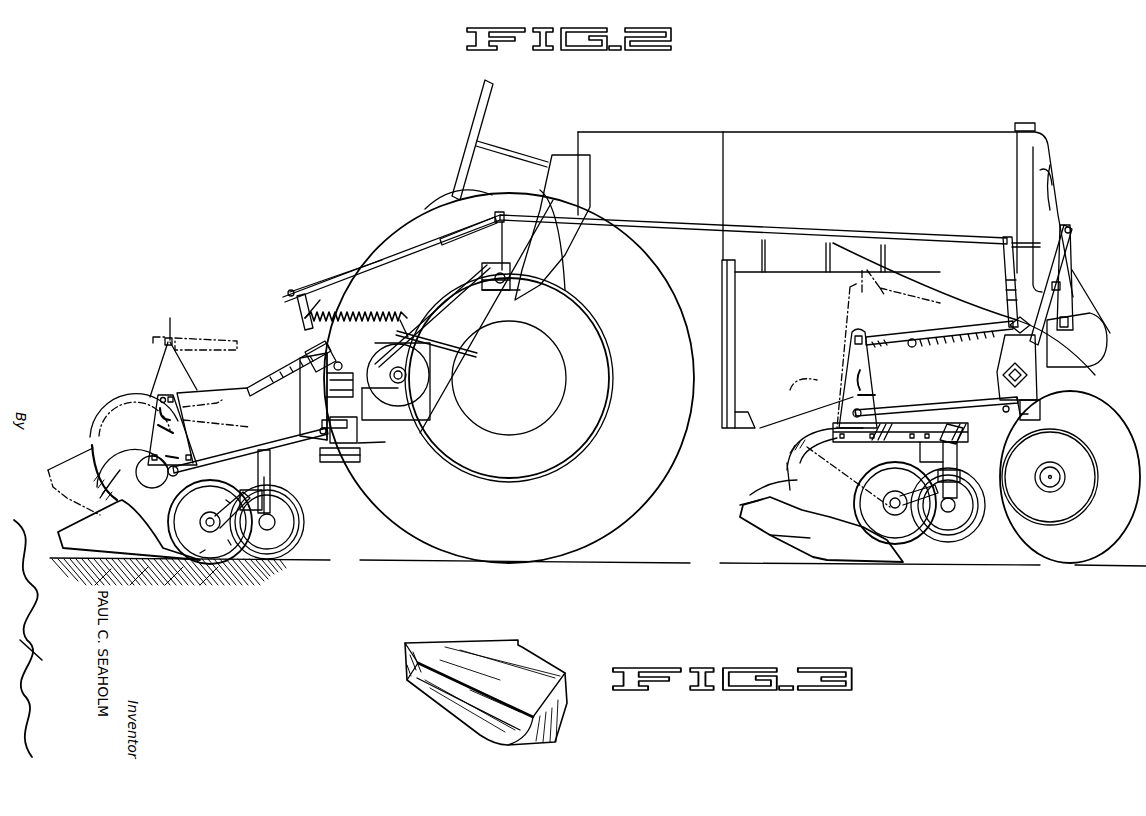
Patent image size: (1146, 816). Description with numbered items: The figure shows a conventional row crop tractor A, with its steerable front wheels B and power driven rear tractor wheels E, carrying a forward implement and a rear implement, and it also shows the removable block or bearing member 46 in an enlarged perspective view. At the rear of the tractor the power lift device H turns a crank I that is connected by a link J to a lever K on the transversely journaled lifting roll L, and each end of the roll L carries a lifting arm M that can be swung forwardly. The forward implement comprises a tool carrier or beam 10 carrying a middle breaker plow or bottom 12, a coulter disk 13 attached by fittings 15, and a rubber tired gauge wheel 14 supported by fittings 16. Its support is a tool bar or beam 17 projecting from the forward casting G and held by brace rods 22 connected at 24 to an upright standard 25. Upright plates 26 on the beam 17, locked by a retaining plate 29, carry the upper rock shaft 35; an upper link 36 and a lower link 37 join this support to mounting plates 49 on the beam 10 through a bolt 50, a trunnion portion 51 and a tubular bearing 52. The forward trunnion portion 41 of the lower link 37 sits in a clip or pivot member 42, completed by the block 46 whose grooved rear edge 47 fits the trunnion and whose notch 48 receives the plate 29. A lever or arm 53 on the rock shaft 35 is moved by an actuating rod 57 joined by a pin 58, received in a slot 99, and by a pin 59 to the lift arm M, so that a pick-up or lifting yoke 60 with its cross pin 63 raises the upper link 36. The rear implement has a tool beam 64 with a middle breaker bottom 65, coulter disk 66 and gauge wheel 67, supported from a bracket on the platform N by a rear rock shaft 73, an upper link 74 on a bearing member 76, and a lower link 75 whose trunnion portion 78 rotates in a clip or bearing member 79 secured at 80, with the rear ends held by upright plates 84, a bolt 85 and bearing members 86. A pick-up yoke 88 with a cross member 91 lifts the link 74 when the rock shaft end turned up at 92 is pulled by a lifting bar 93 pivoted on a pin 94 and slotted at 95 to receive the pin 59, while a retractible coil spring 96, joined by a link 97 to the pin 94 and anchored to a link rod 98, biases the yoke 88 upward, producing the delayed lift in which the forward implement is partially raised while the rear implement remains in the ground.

In FIG. 2, the row crop tractor A is at (800, 130).
In FIG. 2, the front wheels B is at (1093, 396).
In FIG. 2, the rear tractor wheels E is at (568, 215).
In FIG. 2, the forward casting G is at (1077, 340).
In FIG. 2, the power lift device H is at (396, 381).
In FIG. 2, the crank I is at (386, 350).
In FIG. 2, the link J is at (440, 305).
In FIG. 2, the lever K is at (506, 270).
In FIG. 2, the lifting roll L is at (518, 290).
In FIG. 2, the lifting arm M is at (478, 261).
In FIG. 2, the platform N is at (390, 455).
In FIG. 2, the tool carrier or beam 10 is at (800, 440).
In FIG. 2, the middle breaker plow or bottom 12 is at (748, 503).
In FIG. 2, the coulter disk 13 is at (910, 540).
In FIG. 2, the gauge wheel 14 is at (958, 540).
In FIG. 2, the fittings 15 is at (911, 455).
In FIG. 2, the fittings 16 is at (958, 462).
In FIG. 2, the tool bar or beam 17 is at (1002, 380).
In FIG. 2, the brace rods 22 is at (1054, 280).
In FIG. 2, the connection of brace rods to standard 24 is at (1072, 226).
In FIG. 2, the upright standard 25 is at (1075, 292).
In FIG. 2, the upright plates 26 is at (1033, 347).
In FIG. 2, the retaining plate 29 is at (1040, 405).
In FIG. 2, the upper rock shaft 35 is at (1022, 317).
In FIG. 2, the upper link 36 is at (905, 335).
In FIG. 2, the lower link 37 is at (925, 410).
In FIG. 2, the trunnion portion 41 is at (1005, 412).
In FIG. 2, the clip or pivot member 42 is at (1024, 412).
In FIG. 3, the block or bearing member 46 is at (438, 643).
In FIG. 3, the grooved rear edge 47 is at (415, 668).
In FIG. 3, the notch 48 is at (535, 662).
In FIG. 2, the mounting plates 49 is at (845, 360).
In FIG. 2, the bolt 50 is at (852, 341).
In FIG. 2, the trunnion portion 51 is at (855, 437).
In FIG. 2, the tubular bearing 52 is at (815, 382).
In FIG. 2, the lever or arm 53 is at (1002, 281).
In FIG. 2, the actuating rod 57 is at (855, 230).
In FIG. 2, the pin 58 is at (1006, 240).
In FIG. 2, the pin 59 is at (502, 210).
In FIG. 2, the pick-up or lifting yoke 60 is at (955, 342).
In FIG. 2, the cross pin 63 is at (911, 346).
In FIG. 2, the tool carrier or beam 64 is at (110, 470).
In FIG. 2, the middle breaker bottom 65 is at (80, 520).
In FIG. 2, the coulter disk 66 is at (205, 522).
In FIG. 2, the gauge wheel 67 is at (300, 525).
In FIG. 2, the rear rock shaft 73 is at (308, 355).
In FIG. 2, the upper link 74 is at (250, 380).
In FIG. 2, the lower link 75 is at (284, 440).
In FIG. 2, the bearing member 76 is at (343, 368).
In FIG. 2, the trunnion portion 78 is at (322, 430).
In FIG. 2, the clip or bearing member 79 is at (320, 456).
In FIG. 2, the securing point 80 is at (357, 428).
In FIG. 2, the upright plates 84 is at (152, 431).
In FIG. 2, the bolt 85 is at (195, 392).
In FIG. 2, the bearing members 86 is at (155, 480).
In FIG. 2, the pick-up yoke 88 is at (280, 380).
In FIG. 2, the cross portion or member 91 is at (242, 388).
In FIG. 2, the upturned arm of rock shaft 92 is at (292, 316).
In FIG. 2, the lifting bar 93 is at (408, 246).
In FIG. 2, the pin 94 is at (290, 290).
In FIG. 2, the elongated slot 95 is at (456, 232).
In FIG. 2, the retractible coil spring 96 is at (386, 323).
In FIG. 2, the link 97 is at (318, 287).
In FIG. 2, the link rod 98 is at (476, 352).
In FIG. 2, the slot 99 is at (1055, 212).